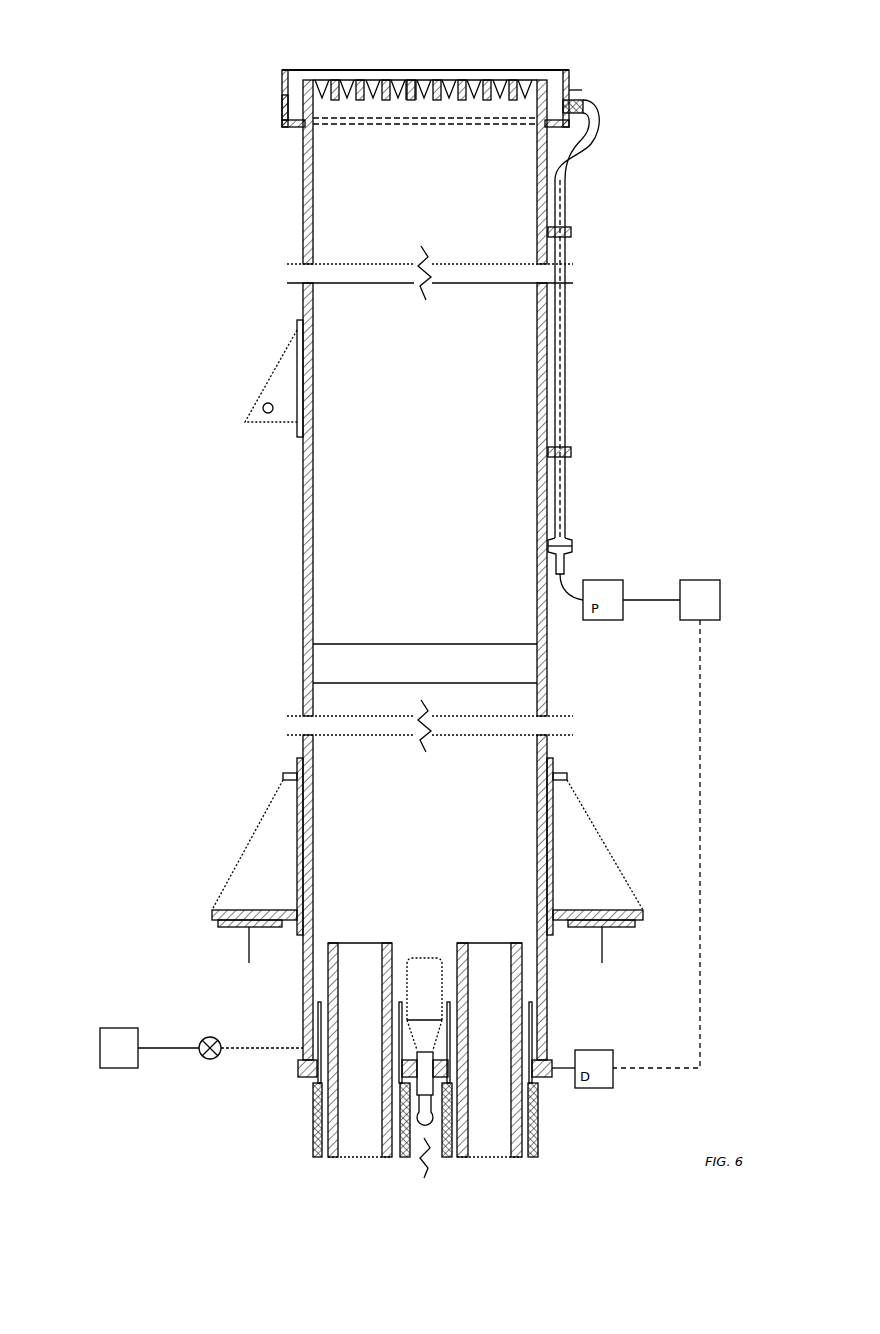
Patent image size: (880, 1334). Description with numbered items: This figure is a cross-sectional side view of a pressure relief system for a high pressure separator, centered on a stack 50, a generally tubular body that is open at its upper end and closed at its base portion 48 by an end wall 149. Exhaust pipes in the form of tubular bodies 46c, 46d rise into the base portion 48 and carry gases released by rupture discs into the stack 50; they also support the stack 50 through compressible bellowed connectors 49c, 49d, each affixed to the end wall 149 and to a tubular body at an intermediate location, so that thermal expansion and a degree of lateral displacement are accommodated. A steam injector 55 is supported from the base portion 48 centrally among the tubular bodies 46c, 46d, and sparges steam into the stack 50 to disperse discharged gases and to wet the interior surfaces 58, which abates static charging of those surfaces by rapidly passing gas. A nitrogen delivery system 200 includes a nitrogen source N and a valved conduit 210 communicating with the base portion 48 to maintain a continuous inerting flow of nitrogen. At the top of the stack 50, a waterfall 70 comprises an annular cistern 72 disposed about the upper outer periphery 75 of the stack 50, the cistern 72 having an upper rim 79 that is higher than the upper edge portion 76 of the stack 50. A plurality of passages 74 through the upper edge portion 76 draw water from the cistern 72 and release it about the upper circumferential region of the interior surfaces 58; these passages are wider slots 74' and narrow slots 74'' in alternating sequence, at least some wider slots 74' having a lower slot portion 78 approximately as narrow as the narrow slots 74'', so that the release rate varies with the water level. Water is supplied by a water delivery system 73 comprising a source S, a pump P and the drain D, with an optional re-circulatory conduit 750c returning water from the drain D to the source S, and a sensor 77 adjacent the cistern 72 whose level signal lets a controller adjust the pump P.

The stack 50 is at (312, 220).
The waterfall 70 is at (376, 24).
The annular cistern 72 is at (564, 94).
The water delivery system 73 is at (707, 566).
The passages 74 is at (425, 97).
The wider slots 74' is at (392, 120).
The narrow slots 74'' is at (431, 120).
The upper outer periphery 75 is at (284, 103).
The upper edge portion 76 is at (352, 84).
The sensor 77 is at (556, 97).
The lower slot portion 78 is at (450, 100).
The upper rim 79 is at (287, 110).
The interior surfaces 58 is at (313, 378).
The re-circulatory conduit 750c is at (701, 718).
The base portion 48 is at (548, 988).
The tubular body 46c is at (464, 942).
The tubular body 46d is at (334, 942).
The steam injector 55 is at (426, 958).
The bellowed connector 49c is at (538, 1126).
The bellowed connector 49d is at (312, 1126).
The end wall 149 is at (298, 1070).
The nitrogen delivery system 200 is at (199, 1038).
The valved conduit 210 is at (166, 1049).